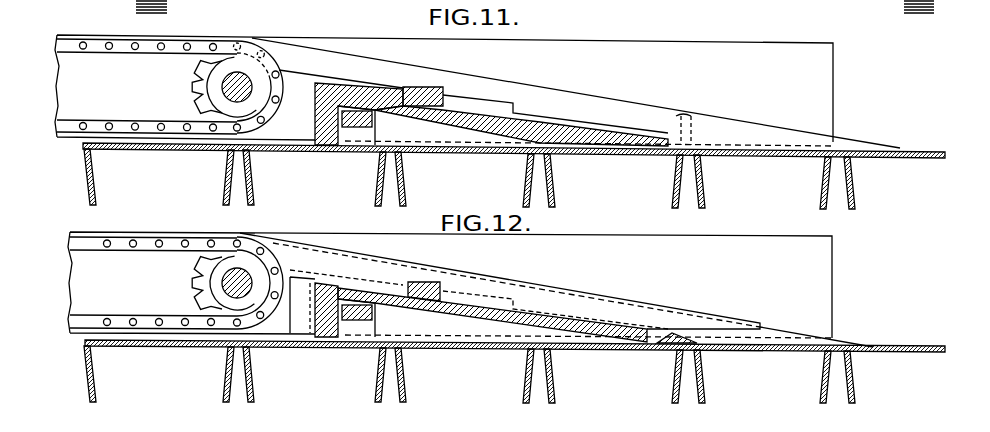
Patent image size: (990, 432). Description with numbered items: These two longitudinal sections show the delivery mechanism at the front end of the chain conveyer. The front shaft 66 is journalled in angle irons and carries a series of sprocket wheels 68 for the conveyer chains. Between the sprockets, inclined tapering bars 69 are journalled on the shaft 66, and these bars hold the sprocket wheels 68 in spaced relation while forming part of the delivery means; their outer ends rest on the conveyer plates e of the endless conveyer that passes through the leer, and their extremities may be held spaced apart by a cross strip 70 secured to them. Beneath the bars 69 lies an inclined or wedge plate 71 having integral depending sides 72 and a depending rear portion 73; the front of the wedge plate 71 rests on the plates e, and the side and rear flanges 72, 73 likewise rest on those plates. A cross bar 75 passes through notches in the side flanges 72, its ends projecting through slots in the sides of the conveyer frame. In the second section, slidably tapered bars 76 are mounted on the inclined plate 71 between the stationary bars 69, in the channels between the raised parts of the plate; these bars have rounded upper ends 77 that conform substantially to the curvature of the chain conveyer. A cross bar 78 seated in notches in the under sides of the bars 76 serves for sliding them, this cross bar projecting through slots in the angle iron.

In FIG. 11, the front shaft 66 is at (241, 74).
In FIG. 12, the front shaft 66 is at (240, 272).
In FIG. 11, the sprocket wheels 68 is at (197, 66).
In FIG. 12, the sprocket wheels 68 is at (190, 282).
In FIG. 11, the inclined tapering bars 69 is at (444, 84).
In FIG. 11, the cross strip 70 is at (668, 144).
In FIG. 12, the cross strip 70 is at (677, 338).
In FIG. 11, the inclined plate 71 is at (487, 120).
In FIG. 12, the inclined plate 71 is at (468, 308).
In FIG. 11, the depending sides 72 is at (424, 128).
In FIG. 12, the depending sides 72 is at (436, 327).
In FIG. 11, the depending rear portion 73 is at (325, 140).
In FIG. 12, the depending rear portion 73 is at (326, 338).
In FIG. 11, the cross bar 75 is at (364, 128).
In FIG. 12, the cross bar 75 is at (363, 324).
In FIG. 12, the slidably tapered bars 76 is at (408, 270).
In FIG. 12, the rounded upper ends 77 is at (295, 247).
In FIG. 11, the cross bar 78 is at (416, 87).
In FIG. 12, the cross bar 78 is at (440, 285).
In FIG. 11, the conveyer plates e is at (556, 190).
In FIG. 12, the conveyer plates e is at (553, 380).